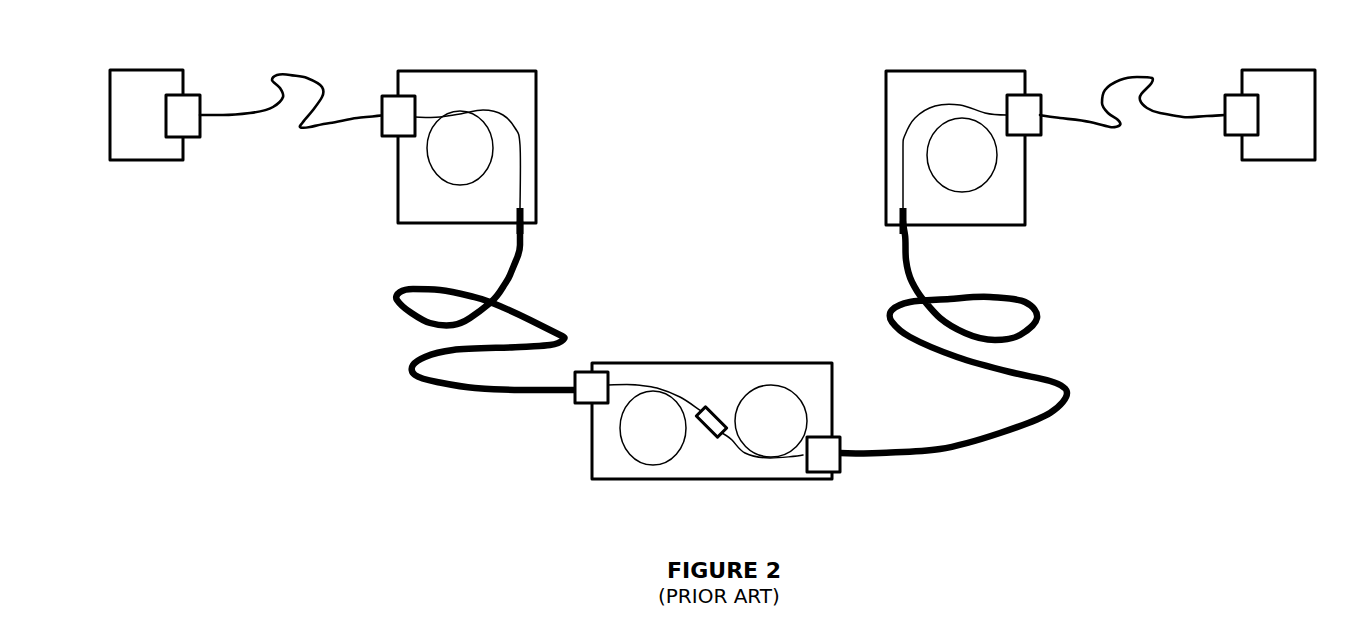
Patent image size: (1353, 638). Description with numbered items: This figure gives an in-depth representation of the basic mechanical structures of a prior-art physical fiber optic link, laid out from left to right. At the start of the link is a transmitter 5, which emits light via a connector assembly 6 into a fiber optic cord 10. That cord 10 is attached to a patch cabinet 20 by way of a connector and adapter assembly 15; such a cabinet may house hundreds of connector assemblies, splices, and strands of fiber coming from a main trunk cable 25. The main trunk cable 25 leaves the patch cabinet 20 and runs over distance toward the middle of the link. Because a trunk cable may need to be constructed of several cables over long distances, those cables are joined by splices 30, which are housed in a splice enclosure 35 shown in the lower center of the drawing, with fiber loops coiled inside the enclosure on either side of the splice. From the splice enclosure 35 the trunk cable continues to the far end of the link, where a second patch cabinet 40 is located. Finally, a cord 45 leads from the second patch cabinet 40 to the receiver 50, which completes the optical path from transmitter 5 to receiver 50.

The transmitter 5 is at (135, 62).
The connector assembly 6 is at (190, 102).
The fiber optic cord 10 is at (300, 128).
The connector and adapter assembly 15 is at (390, 108).
The patch cabinet 20 is at (463, 62).
The main trunk cable 25 is at (422, 390).
The splices 30 is at (718, 428).
The splice enclosure 35 is at (693, 360).
The second patch cabinet 40 is at (940, 63).
The cord 45 is at (1122, 75).
The receiver 50 is at (1273, 65).